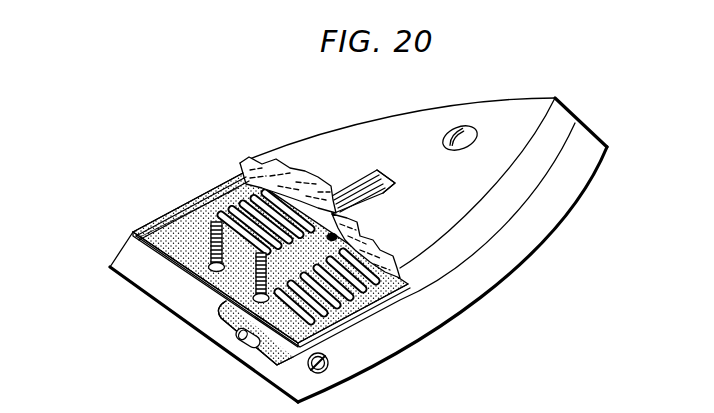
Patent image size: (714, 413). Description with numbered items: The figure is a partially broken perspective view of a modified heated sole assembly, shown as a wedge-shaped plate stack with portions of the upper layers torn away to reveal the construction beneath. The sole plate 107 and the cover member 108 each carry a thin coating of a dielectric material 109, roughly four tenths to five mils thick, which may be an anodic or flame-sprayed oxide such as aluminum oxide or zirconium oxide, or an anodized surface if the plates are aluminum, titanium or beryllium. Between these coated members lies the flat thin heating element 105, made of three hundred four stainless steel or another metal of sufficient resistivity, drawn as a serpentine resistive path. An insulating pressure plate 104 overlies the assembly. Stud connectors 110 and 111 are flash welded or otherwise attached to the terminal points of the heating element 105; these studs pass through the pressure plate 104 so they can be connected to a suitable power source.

The insulating pressure plate 104 is at (337, 126).
The flat thin heating element 105 is at (230, 192).
The sole plate 107 is at (148, 227).
The cover member 108 is at (147, 237).
The dielectric material coating 109 is at (185, 222).
The stud connector 110 is at (210, 265).
The stud connector 111 is at (240, 296).